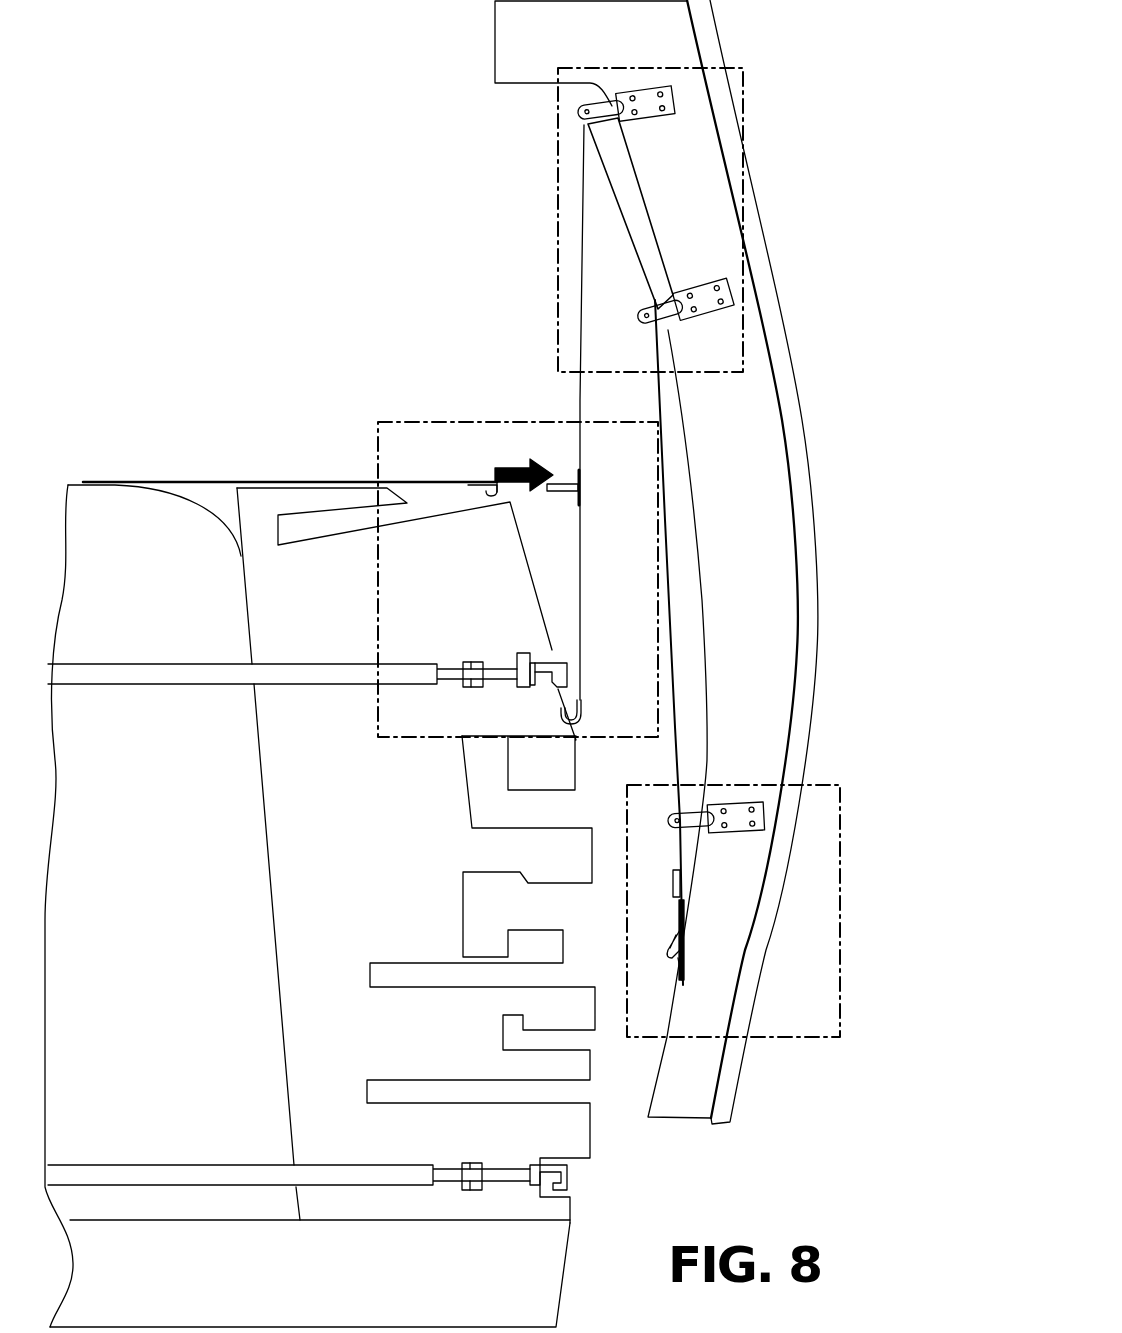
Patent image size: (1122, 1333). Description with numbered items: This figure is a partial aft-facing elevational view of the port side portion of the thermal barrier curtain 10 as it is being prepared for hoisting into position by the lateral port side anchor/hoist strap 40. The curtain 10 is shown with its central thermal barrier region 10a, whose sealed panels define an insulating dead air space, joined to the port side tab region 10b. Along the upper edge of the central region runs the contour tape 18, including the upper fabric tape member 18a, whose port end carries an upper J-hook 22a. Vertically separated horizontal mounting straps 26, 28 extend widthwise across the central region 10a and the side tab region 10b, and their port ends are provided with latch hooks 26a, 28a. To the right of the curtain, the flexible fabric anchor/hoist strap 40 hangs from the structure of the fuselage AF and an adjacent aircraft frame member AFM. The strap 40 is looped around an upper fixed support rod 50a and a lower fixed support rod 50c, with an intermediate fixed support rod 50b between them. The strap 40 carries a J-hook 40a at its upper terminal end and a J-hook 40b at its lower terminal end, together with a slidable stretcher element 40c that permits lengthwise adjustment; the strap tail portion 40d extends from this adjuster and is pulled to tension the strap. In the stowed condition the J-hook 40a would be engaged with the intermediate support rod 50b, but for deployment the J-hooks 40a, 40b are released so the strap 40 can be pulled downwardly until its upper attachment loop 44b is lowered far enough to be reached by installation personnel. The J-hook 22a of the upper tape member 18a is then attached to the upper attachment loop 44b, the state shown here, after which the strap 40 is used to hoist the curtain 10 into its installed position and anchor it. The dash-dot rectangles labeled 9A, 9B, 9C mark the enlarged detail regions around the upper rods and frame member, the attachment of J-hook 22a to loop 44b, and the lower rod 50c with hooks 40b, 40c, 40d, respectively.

The thermal barrier curtain 10 is at (42, 494).
The central thermal barrier region 10a is at (145, 945).
The port side tab region 10b is at (315, 838).
The contour tape 18 is at (104, 482).
The upper fabric tape member 18a is at (410, 483).
The upper J-hook 22a is at (490, 500).
The horizontal mounting strap 26 is at (182, 1175).
The latch hook 26a is at (550, 1163).
The horizontal mounting strap 28 is at (160, 684).
The latch hook 28a is at (535, 660).
The port side anchor/hoist strap 40 is at (686, 549).
The J-hook 40a is at (580, 720).
The J-hook 40b is at (666, 950).
The slidable stretcher element 40c is at (670, 888).
The strap tail portion 40d is at (680, 964).
The upper attachment loop 44b is at (562, 483).
The upper fixed support rod 50a is at (610, 108).
The intermediate fixed support rod 50b is at (662, 325).
The lower fixed support rod 50c is at (694, 812).
The fuselage AF is at (742, 1077).
The aircraft frame member AFM is at (691, 250).
The detail region 9A is at (745, 262).
The detail region 9B is at (428, 416).
The detail region 9C is at (846, 926).